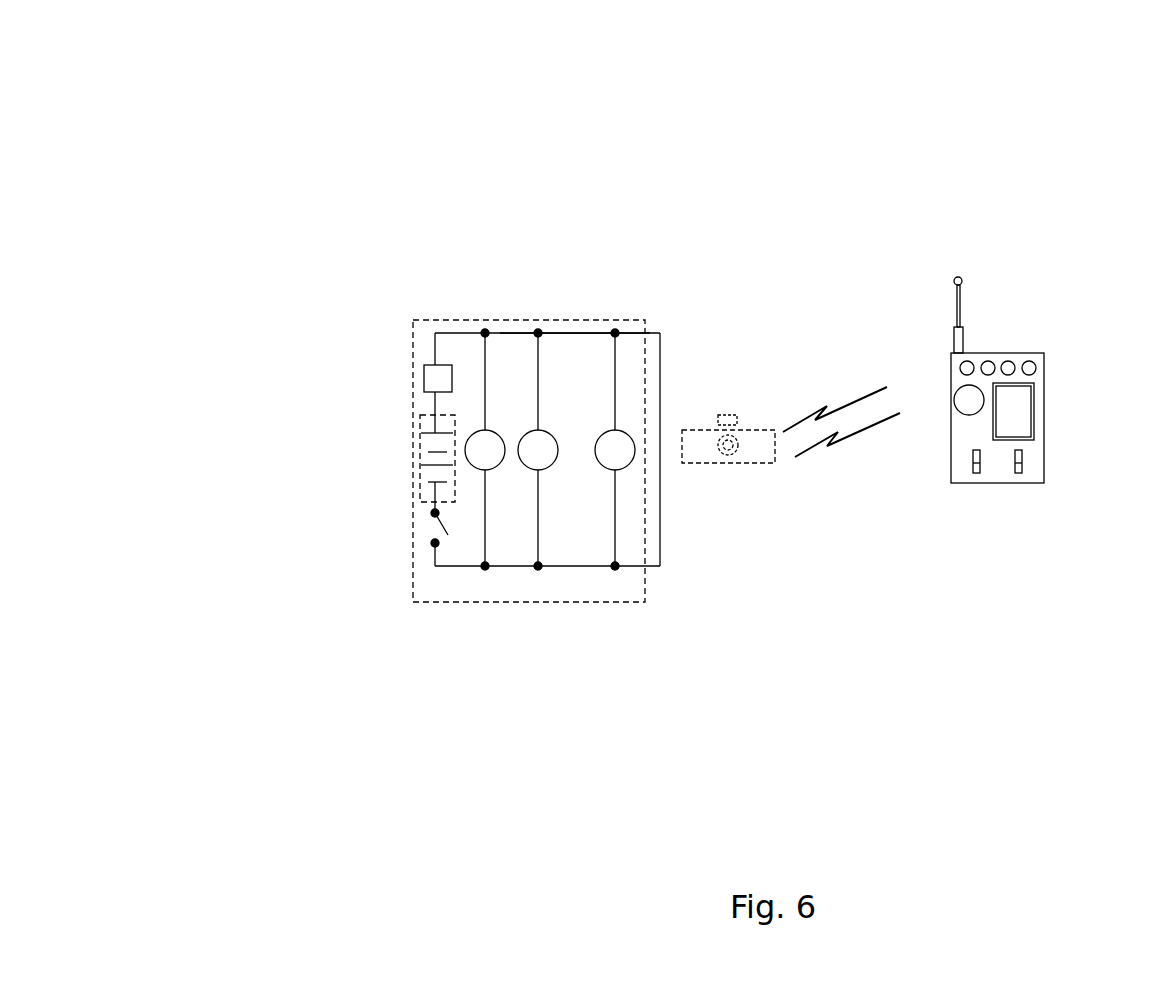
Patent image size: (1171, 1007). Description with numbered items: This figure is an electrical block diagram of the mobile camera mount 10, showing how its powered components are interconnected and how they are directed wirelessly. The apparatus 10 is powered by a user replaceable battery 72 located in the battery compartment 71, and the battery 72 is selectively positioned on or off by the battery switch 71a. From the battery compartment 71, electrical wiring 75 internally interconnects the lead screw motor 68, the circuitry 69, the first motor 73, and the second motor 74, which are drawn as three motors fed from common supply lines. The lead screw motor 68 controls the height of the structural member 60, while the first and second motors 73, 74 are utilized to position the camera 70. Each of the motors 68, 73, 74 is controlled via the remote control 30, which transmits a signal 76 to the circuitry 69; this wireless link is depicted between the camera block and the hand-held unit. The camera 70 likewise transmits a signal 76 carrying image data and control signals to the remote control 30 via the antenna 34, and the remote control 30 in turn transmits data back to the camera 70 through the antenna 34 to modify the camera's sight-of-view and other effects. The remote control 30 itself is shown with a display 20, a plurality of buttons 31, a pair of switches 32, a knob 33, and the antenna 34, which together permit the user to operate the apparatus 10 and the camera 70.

The mobile camera mount 10 is at (250, 136).
The structural member 60 is at (437, 320).
The lead screw motor 68 is at (479, 333).
The circuitry 69 is at (432, 372).
The camera 70 is at (702, 463).
The battery compartment 71 is at (428, 412).
The battery switch 71a is at (433, 512).
The battery 72 is at (421, 465).
The first motor 73 is at (528, 468).
The second motor 74 is at (627, 468).
The electrical wiring 75 is at (613, 383).
The signal 76 is at (853, 407).
The display 20 is at (1018, 412).
The remote control 30 is at (1045, 440).
The buttons 31 is at (1029, 362).
The switches 32 is at (1012, 465).
The knob 33 is at (960, 395).
The antenna 34 is at (958, 310).